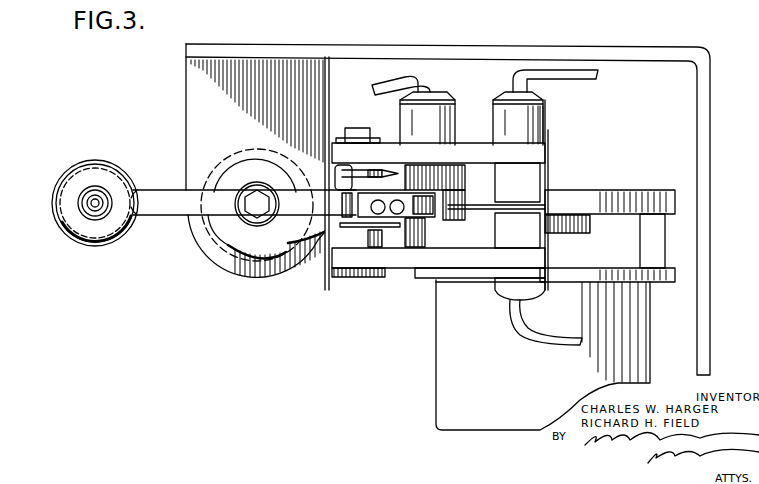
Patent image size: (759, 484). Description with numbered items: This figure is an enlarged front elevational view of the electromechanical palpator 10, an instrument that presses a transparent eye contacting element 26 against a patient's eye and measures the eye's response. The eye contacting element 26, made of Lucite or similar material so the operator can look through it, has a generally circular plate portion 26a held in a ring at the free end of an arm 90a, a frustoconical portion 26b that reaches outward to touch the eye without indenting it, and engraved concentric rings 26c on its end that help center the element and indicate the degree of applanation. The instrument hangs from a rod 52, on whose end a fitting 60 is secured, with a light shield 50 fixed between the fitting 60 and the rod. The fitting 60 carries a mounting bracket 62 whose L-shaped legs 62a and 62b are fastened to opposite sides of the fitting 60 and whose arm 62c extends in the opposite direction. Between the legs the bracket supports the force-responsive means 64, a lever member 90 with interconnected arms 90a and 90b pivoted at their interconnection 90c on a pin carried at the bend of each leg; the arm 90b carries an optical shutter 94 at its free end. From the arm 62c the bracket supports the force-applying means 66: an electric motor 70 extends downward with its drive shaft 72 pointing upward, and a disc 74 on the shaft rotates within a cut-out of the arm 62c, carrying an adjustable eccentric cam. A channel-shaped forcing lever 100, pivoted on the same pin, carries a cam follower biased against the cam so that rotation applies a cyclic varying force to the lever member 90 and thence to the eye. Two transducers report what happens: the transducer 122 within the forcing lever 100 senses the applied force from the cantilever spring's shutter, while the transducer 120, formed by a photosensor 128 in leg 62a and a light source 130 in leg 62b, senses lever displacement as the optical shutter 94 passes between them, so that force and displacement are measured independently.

The electromechanical palpator 10 is at (516, 44).
The light shield 50 is at (393, 45).
The rod 52 is at (225, 248).
The fitting 60 is at (330, 240).
The eye contacting element 26 is at (84, 234).
The generally circular portion 26a is at (83, 176).
The frustoconical portion 26b is at (78, 208).
The concentric rings 26c is at (93, 200).
The lever member 90 is at (165, 185).
The arm 90a is at (178, 216).
The arm 90b is at (446, 217).
The interconnection 90c is at (330, 160).
The forcing lever 100 is at (369, 177).
The mounting bracket 62 is at (474, 134).
The leg 62a is at (370, 258).
The leg 62b is at (390, 140).
The arm 62c is at (636, 186).
The force-responsive means 64 is at (396, 240).
The means for applying a varying force 66 is at (448, 300).
The electric motor 70 is at (440, 368).
The drive shaft 72 is at (553, 252).
The disc 74 is at (590, 230).
The optical shutter 94 is at (472, 205).
The transducer 120 is at (553, 137).
The transducer 122 is at (455, 92).
The photosensor 128 is at (530, 241).
The light source 130 is at (547, 108).